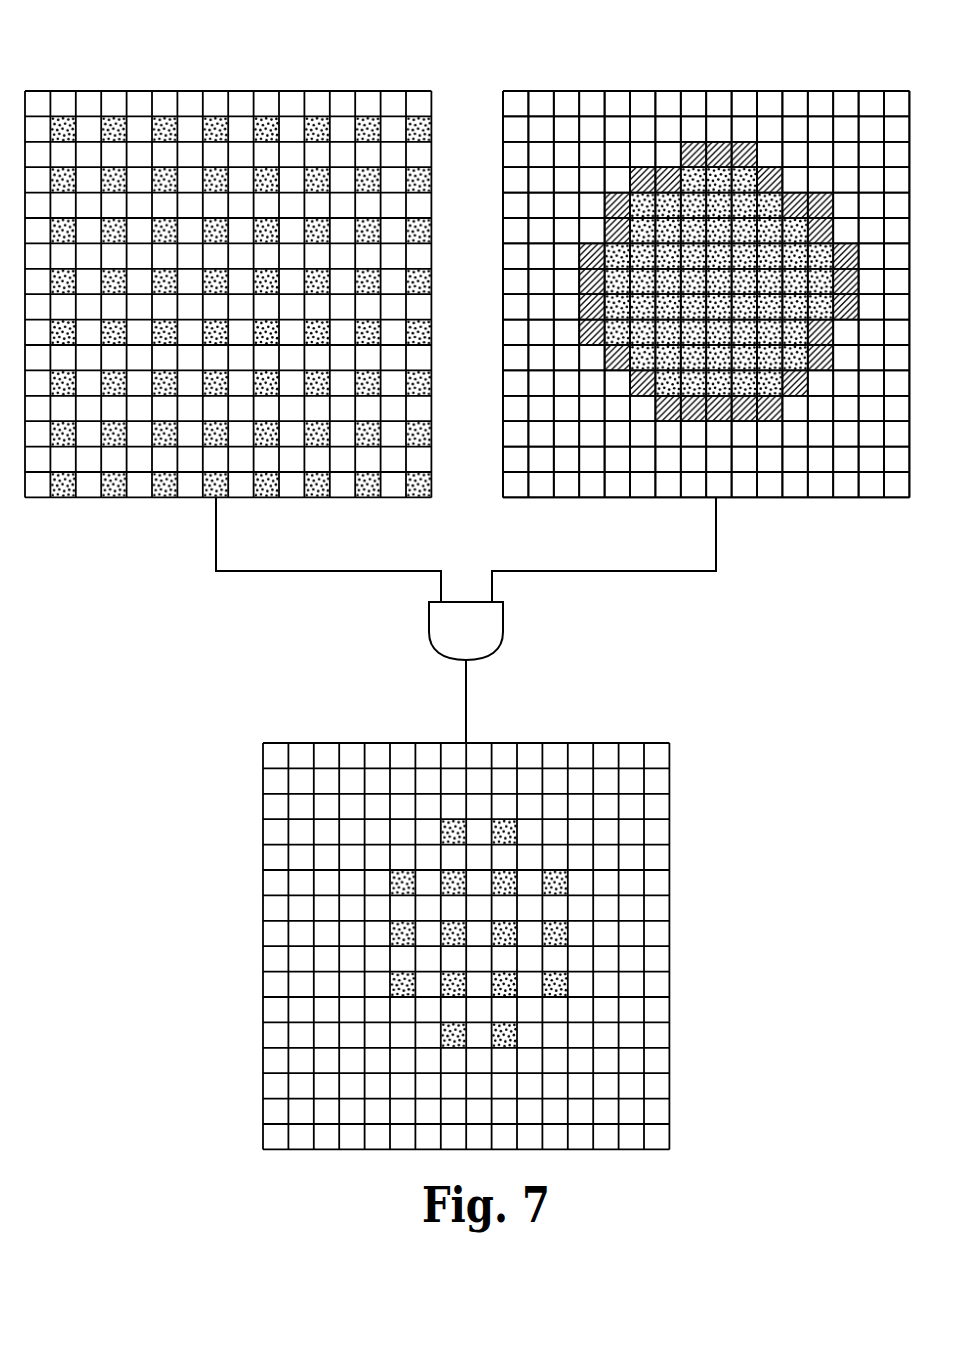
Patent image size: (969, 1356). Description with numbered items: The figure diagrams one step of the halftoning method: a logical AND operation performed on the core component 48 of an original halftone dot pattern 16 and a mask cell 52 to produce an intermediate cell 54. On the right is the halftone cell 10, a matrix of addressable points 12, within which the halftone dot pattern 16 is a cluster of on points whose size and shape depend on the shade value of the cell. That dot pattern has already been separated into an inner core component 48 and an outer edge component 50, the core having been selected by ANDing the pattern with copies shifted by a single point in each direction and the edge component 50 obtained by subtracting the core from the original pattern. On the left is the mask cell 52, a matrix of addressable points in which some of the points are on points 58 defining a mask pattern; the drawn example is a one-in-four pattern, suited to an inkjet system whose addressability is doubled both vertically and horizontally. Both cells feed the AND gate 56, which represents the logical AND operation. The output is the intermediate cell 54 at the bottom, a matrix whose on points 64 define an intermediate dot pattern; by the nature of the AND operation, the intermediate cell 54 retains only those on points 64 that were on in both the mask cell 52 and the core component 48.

The halftone cell 10 is at (706, 257).
The addressable points 12 is at (706, 263).
The halftone dot pattern 16 is at (718, 219).
The core component 48 is at (719, 223).
The edge component 50 is at (718, 237).
The mask cell 52 is at (228, 255).
The intermediate cell 54 is at (432, 928).
The AND gate 56 is at (484, 622).
The on points 58 is at (345, 41).
The on points 64 is at (479, 877).